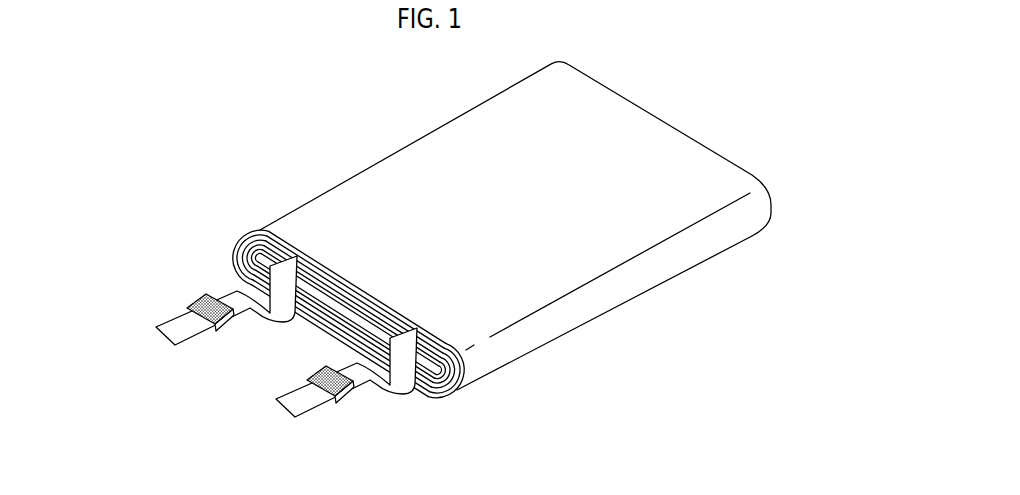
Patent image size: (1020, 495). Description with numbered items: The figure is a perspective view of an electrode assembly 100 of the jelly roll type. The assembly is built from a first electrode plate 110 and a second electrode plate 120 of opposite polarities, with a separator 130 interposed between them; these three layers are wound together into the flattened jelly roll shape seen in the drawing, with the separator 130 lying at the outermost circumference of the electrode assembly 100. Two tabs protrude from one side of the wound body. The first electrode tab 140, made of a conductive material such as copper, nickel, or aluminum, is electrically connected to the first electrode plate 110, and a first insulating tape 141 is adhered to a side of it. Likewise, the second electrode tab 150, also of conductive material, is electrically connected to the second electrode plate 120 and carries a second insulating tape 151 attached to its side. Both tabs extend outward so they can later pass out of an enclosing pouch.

The electrode assembly 100 is at (183, 76).
The first electrode plate 110 is at (245, 235).
The second electrode plate 120 is at (259, 230).
The separator 130 is at (240, 258).
The first electrode tab 140 is at (293, 405).
The first insulating tape 141 is at (307, 381).
The second electrode tab 150 is at (168, 336).
The second insulating tape 151 is at (188, 303).